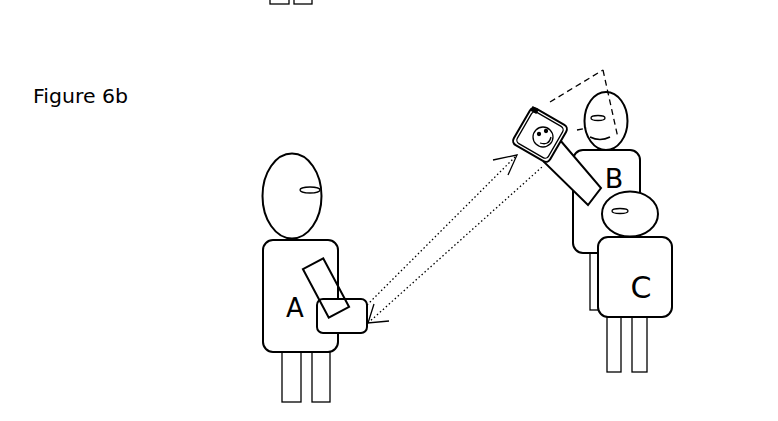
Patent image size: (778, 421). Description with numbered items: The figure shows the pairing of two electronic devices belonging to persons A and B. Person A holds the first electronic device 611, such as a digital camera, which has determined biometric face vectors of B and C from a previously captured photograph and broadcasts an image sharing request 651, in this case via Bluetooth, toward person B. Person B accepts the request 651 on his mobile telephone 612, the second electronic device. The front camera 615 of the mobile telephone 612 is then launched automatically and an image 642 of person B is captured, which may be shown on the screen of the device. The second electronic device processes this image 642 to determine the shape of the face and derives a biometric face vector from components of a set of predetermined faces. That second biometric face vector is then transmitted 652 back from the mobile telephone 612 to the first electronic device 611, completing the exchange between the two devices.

The first electronic device 611 is at (386, 342).
The mobile telephone 612 is at (489, 82).
The front camera 615 is at (535, 110).
The image 642 is at (517, 132).
The image sharing request 651 is at (428, 238).
The transmission of biometric face vector 652 is at (450, 252).